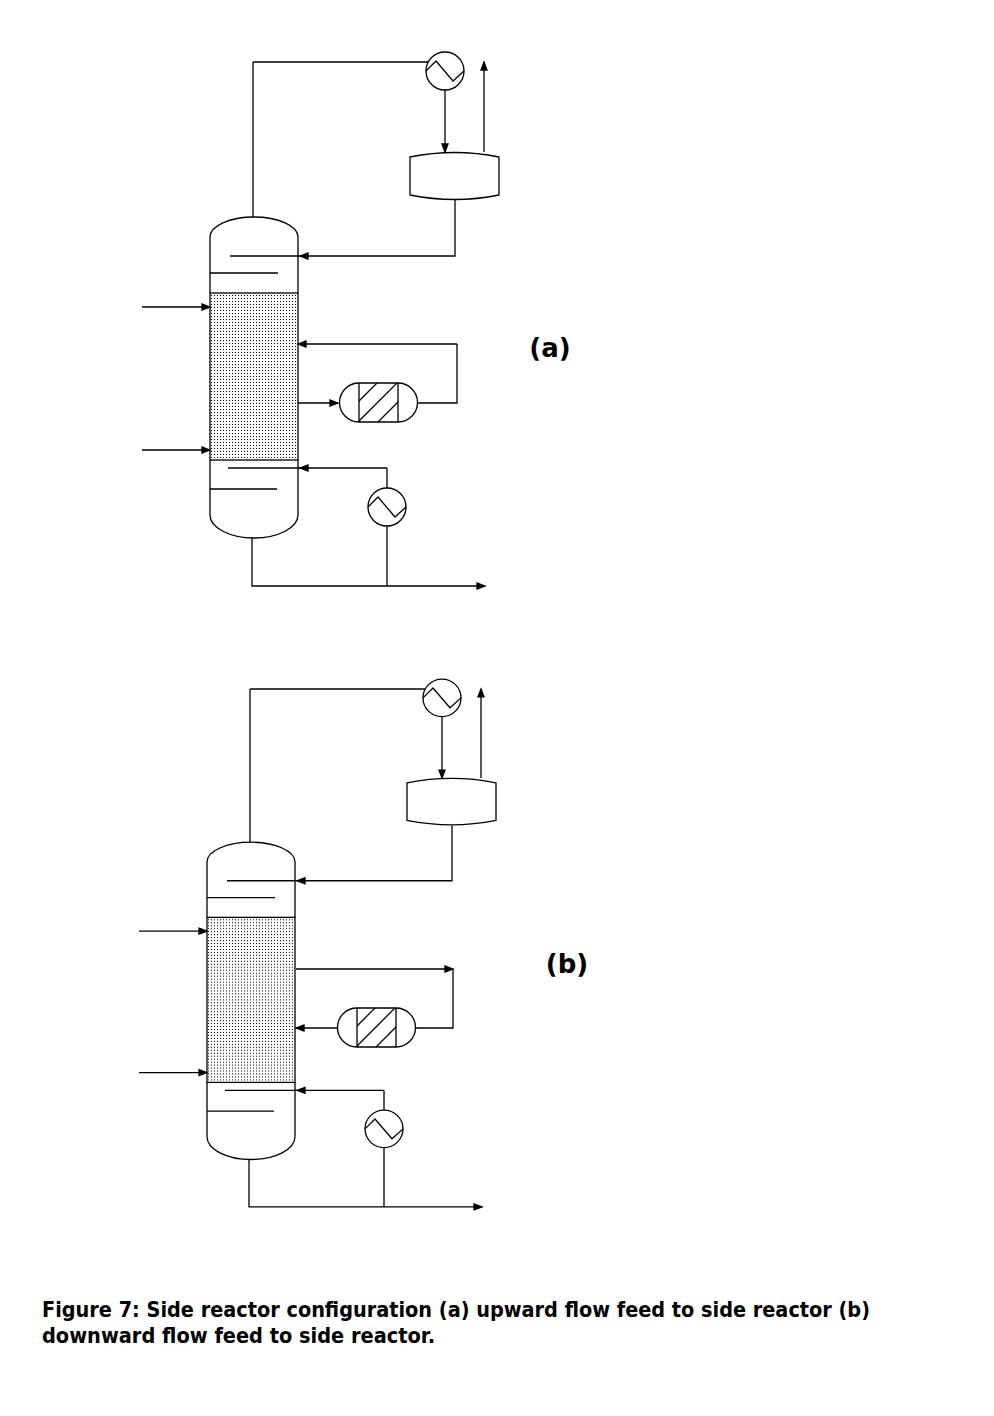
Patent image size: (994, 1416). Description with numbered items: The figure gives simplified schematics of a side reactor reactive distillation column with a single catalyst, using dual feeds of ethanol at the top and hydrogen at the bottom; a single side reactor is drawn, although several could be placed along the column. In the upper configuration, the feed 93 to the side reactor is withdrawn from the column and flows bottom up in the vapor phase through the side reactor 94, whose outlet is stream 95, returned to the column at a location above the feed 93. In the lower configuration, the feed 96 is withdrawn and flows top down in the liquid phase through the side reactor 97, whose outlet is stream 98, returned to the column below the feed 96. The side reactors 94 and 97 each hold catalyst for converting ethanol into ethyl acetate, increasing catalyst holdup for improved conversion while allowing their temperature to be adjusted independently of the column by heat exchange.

The feed 93 is at (308, 404).
The side reactor 94 is at (413, 420).
The stream 95 is at (440, 344).
The feed 96 is at (440, 969).
The side reactor 97 is at (410, 1045).
The stream 98 is at (305, 1030).